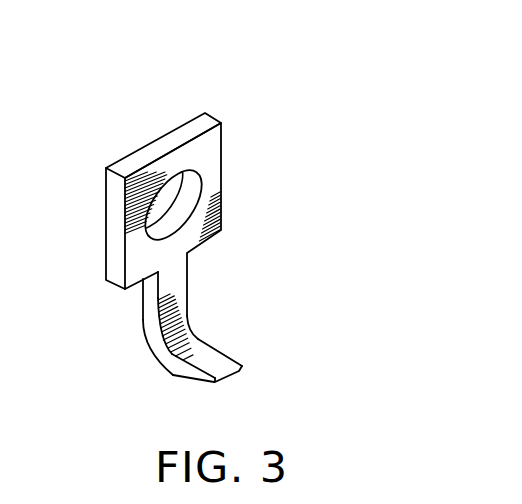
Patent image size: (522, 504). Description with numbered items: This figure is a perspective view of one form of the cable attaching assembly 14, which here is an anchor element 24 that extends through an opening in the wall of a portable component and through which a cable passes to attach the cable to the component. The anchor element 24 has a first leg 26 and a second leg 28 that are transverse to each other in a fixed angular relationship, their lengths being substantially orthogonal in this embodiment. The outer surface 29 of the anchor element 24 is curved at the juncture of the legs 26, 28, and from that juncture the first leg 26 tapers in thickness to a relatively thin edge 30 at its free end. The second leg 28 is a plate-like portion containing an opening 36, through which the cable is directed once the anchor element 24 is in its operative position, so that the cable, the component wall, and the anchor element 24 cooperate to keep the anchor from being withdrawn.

The cable attaching assembly 14 is at (172, 234).
The anchor element 24 is at (203, 147).
The opening 36 is at (150, 202).
The second leg 28 is at (158, 312).
The outer surface 29 is at (173, 376).
The first leg 26 is at (217, 363).
The thin edge 30 is at (231, 369).